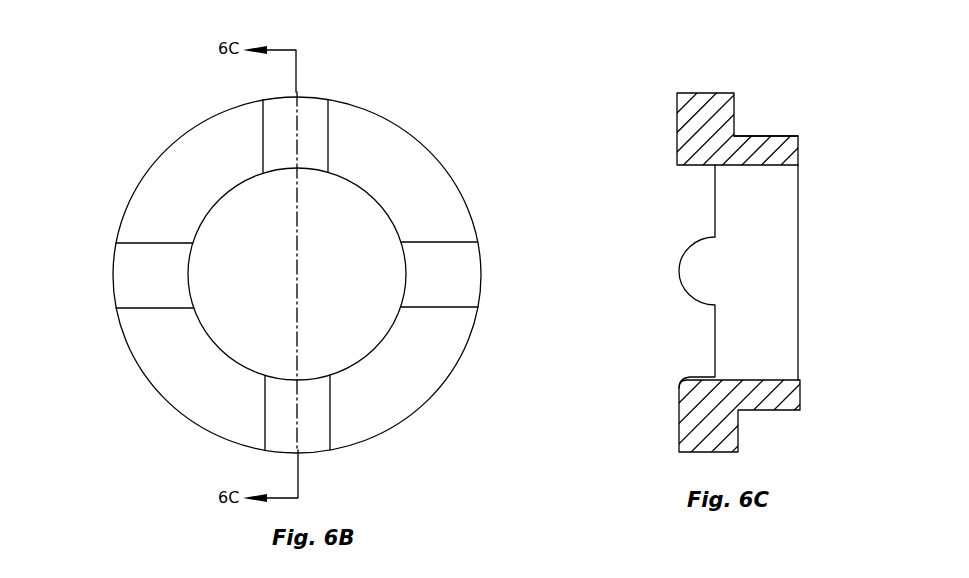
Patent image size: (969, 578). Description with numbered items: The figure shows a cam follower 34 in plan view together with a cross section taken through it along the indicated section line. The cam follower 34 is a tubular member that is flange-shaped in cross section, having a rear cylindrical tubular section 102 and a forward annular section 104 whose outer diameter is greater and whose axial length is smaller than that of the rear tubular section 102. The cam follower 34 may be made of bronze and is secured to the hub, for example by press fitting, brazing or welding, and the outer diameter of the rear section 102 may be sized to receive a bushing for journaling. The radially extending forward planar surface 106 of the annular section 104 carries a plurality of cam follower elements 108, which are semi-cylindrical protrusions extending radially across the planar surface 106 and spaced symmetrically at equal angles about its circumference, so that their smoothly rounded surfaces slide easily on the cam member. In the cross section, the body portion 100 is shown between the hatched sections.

In FIG. 6B, the cam follower 34 is at (100, 320).
In FIG. 6C, the cam follower 34 is at (612, 385).
In FIG. 6C, the ring body 100 is at (799, 238).
In FIG. 6C, the rear cylindrical tubular section 102 is at (778, 136).
In FIG. 6B, the forward annular section 104 is at (164, 152).
In FIG. 6C, the forward annular section 104 is at (734, 108).
In FIG. 6B, the forward planar surface 106 is at (400, 173).
In FIG. 6C, the forward planar surface 106 is at (715, 206).
In FIG. 6B, the cam follower elements 108 is at (287, 142).
In FIG. 6C, the cam follower elements 108 is at (678, 136).